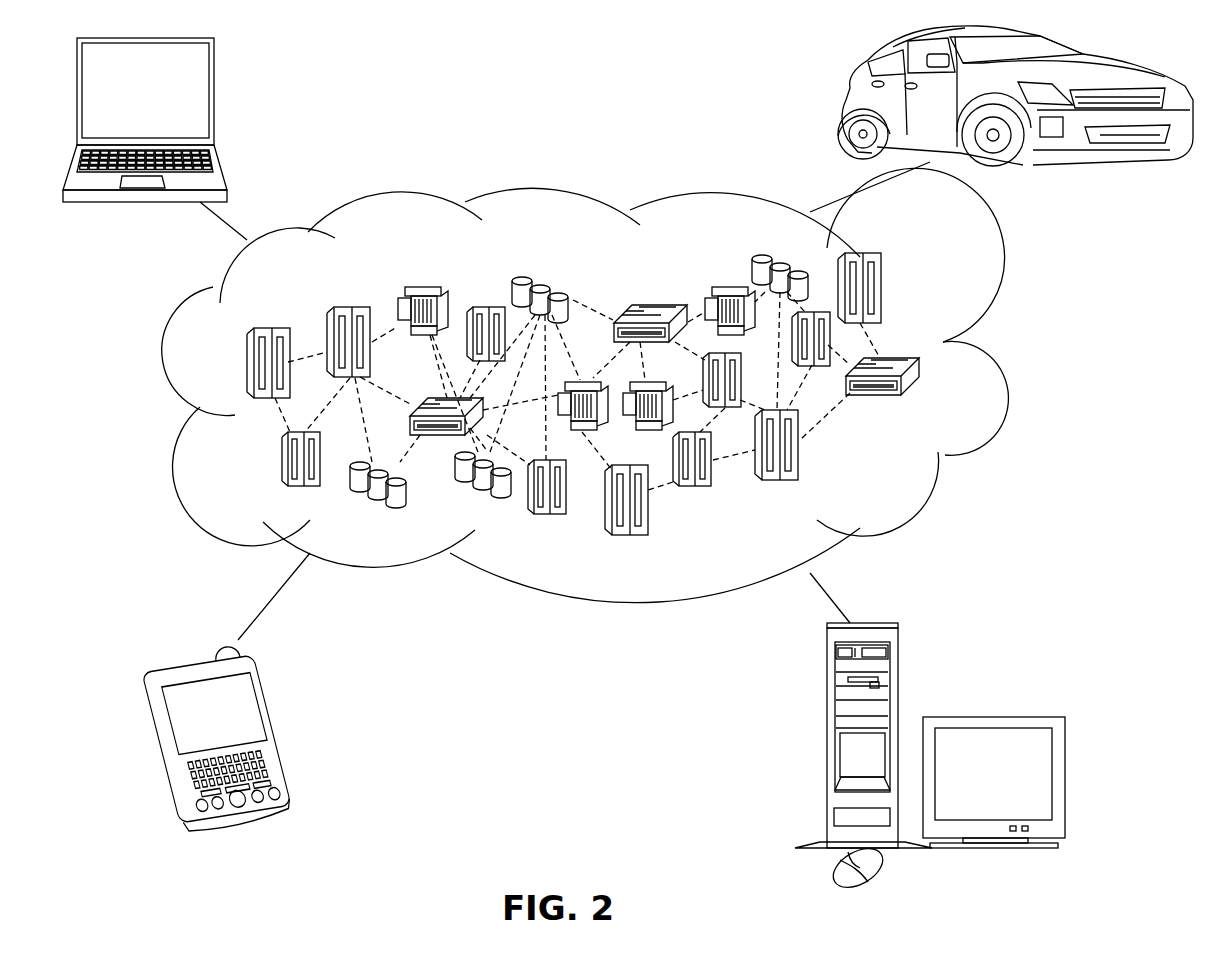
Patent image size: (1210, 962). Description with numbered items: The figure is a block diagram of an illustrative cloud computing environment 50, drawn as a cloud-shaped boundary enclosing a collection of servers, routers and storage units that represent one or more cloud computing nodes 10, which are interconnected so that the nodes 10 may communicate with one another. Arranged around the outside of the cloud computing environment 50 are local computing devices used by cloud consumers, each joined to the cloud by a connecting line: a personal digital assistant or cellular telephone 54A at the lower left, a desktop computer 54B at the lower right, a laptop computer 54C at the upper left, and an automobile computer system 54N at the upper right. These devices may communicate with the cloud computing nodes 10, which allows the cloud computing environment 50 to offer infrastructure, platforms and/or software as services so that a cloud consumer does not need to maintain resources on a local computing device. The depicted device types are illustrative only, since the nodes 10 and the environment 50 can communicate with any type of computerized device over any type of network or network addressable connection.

The cloud computing nodes 10 is at (899, 470).
The cloud computing environment 50 is at (983, 377).
The personal digital assistant or cellular telephone 54A is at (268, 698).
The desktop computer 54B is at (827, 682).
The laptop computer 54C is at (215, 74).
The automobile computer system 54N is at (842, 90).